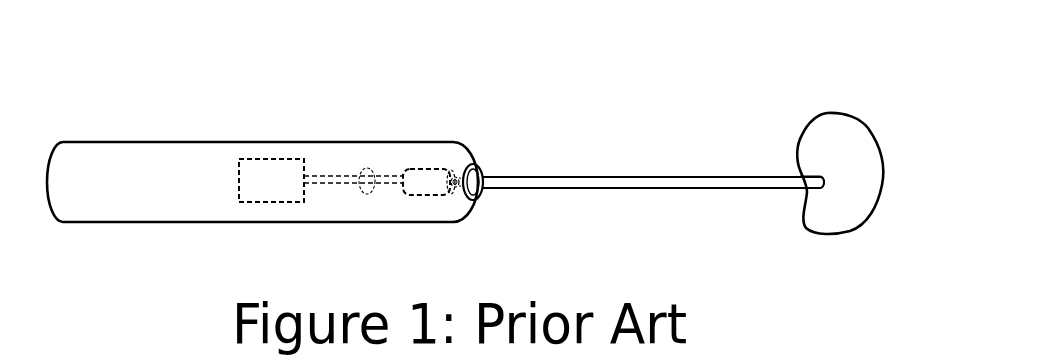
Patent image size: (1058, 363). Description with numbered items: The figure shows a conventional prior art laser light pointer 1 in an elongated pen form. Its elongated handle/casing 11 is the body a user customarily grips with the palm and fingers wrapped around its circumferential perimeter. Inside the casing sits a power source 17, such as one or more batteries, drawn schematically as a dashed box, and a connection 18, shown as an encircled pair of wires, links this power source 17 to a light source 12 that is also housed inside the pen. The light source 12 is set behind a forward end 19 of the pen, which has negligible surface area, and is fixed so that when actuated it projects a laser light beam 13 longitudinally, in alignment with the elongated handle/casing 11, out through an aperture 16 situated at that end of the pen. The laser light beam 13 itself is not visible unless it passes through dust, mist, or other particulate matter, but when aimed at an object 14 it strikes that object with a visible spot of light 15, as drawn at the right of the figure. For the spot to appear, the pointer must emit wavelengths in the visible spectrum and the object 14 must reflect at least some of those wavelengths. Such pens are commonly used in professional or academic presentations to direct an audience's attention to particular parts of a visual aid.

The laser light pointer 1 is at (275, 113).
The elongated handle/casing 11 is at (195, 200).
The light source 12 is at (418, 183).
The laser light beam 13 is at (583, 185).
The object 14 is at (837, 153).
The visible spot of light 15 is at (799, 178).
The aperture 16 is at (483, 170).
The power source 17 is at (272, 179).
The connection 18 is at (372, 168).
The forward end 19 is at (465, 205).